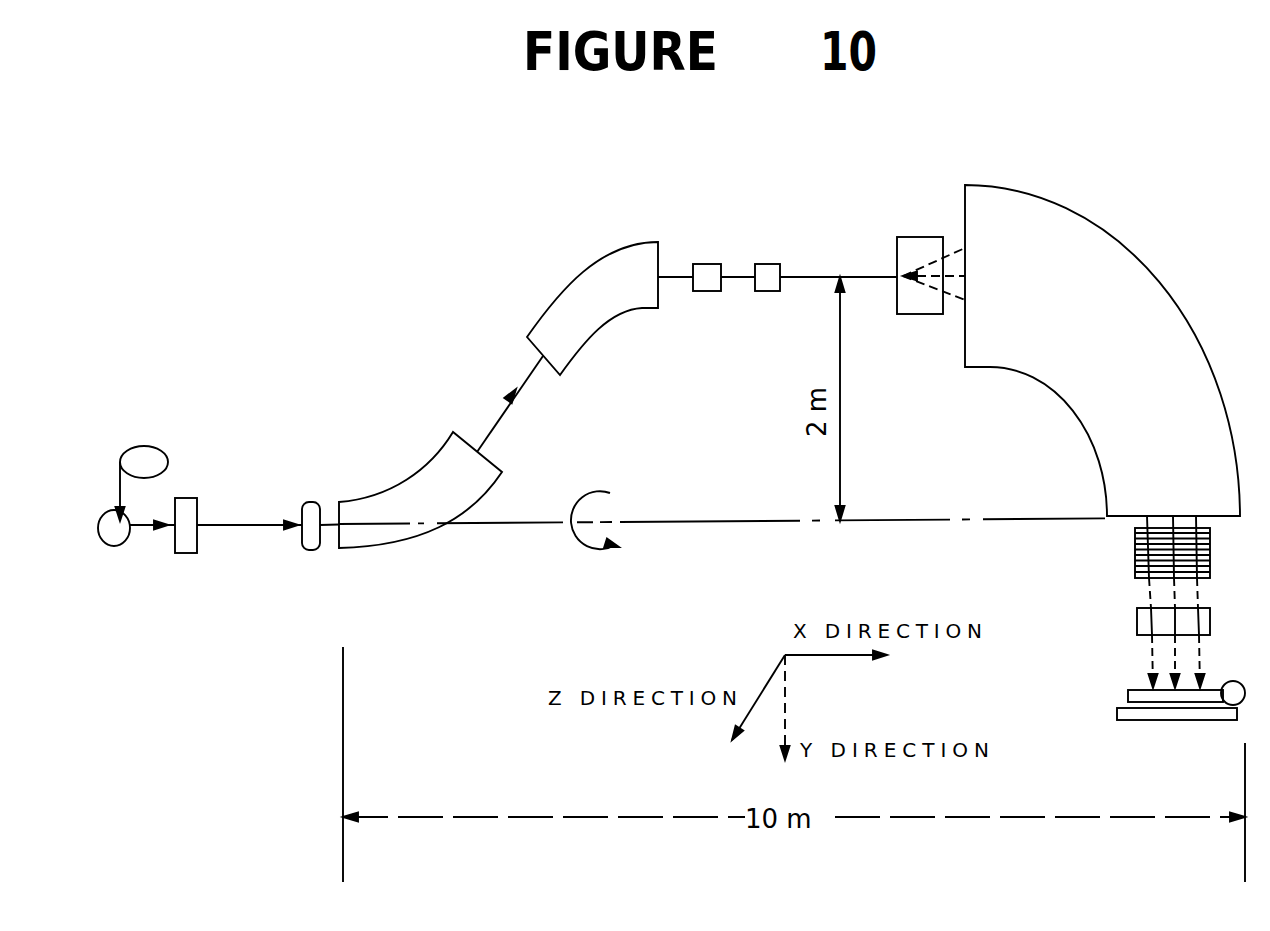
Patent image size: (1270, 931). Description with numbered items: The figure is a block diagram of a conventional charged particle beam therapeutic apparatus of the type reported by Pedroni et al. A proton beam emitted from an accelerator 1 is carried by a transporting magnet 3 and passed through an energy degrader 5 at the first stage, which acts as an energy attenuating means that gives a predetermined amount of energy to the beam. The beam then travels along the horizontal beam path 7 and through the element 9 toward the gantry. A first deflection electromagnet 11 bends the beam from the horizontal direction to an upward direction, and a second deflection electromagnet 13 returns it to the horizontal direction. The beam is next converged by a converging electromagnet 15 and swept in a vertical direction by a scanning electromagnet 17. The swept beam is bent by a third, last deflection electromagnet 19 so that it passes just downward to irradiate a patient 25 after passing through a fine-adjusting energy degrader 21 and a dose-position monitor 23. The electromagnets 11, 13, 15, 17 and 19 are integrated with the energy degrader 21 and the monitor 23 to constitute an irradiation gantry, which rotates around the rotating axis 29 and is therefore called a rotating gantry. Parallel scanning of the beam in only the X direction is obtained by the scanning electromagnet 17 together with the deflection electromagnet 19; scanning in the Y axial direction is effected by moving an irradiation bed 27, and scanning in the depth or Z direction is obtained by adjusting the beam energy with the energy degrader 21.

The accelerator 1 is at (152, 447).
The transporting magnet 3 is at (110, 542).
The energy degrader 5 is at (197, 500).
The ion beam 7 is at (243, 530).
The aperture 9 is at (308, 552).
The first deflection electromagnet 11 is at (408, 483).
The second deflection electromagnet 13 is at (543, 307).
The converging electromagnet 15 is at (770, 263).
The scanning electromagnet 17 is at (907, 237).
The third deflection electromagnet 19 is at (1167, 293).
The fine-adjusting energy degrader 21 is at (1135, 552).
The dose-position monitor 23 is at (1137, 625).
The patient 25 is at (1128, 690).
The irradiation bed 27 is at (1182, 722).
The rotating axis 29 is at (677, 523).